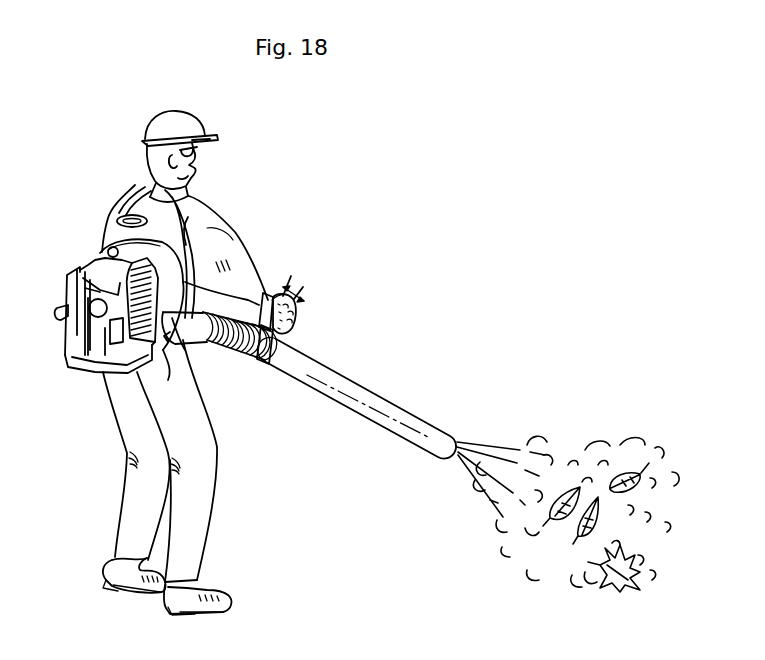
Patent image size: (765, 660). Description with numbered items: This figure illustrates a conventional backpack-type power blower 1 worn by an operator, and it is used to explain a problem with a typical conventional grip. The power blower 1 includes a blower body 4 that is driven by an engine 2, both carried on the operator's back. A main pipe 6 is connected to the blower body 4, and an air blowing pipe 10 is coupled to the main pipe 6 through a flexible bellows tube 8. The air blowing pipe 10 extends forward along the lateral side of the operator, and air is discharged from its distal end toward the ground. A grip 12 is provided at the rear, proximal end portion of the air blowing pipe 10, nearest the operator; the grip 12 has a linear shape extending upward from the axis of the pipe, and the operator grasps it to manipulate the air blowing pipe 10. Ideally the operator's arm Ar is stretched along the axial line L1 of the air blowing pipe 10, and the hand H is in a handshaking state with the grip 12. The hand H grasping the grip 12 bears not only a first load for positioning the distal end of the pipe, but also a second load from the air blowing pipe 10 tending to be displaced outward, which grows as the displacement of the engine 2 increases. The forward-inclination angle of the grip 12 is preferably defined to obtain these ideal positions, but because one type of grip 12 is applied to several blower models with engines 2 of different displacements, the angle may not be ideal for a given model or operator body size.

The backpack-type power blower 1 is at (52, 244).
The engine 2 is at (100, 296).
The blower body 4 is at (163, 275).
The main pipe 6 is at (182, 352).
The bellows tube 8 is at (226, 349).
The air blowing pipe 10 is at (356, 397).
The grip 12 is at (293, 305).
The hand H is at (286, 338).
The arm Ar is at (207, 228).
The axial line L1 is at (336, 391).